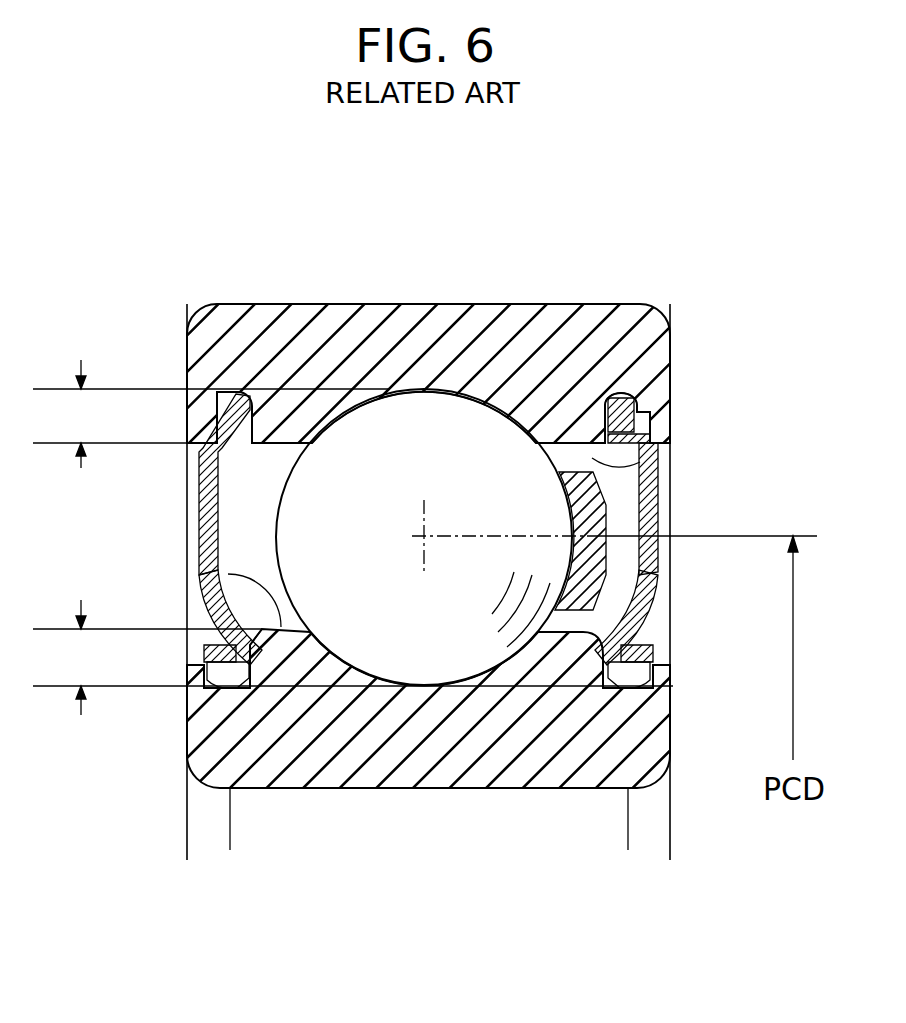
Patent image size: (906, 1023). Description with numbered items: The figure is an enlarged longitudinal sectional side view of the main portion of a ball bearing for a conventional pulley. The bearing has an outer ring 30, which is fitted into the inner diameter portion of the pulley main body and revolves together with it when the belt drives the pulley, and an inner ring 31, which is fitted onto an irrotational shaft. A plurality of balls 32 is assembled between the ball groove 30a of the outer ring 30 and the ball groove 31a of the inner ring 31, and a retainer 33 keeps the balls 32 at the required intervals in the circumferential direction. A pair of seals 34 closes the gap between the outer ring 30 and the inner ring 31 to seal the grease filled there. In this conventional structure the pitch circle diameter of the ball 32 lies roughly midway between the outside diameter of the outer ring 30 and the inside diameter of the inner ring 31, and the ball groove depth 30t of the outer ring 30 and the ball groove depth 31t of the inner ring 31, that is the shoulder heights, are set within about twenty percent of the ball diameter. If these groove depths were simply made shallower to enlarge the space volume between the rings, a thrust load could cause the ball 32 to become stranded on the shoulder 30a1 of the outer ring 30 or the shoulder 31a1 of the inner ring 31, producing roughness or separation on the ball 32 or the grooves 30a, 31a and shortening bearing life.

The outer ring 30 is at (562, 325).
The ball groove of the outer ring 30a is at (417, 402).
The shoulder of the outer ring 30a1 is at (648, 457).
The ball groove depth of the outer ring 30t is at (210, 414).
The inner ring 31 is at (560, 790).
The ball groove of the inner ring 31a is at (411, 790).
The shoulder of the inner ring 31a1 is at (235, 583).
The ball groove depth of the inner ring 31t is at (351, 657).
The ball 32 is at (473, 655).
The retainer 33 is at (607, 518).
The seal 34 is at (200, 468).